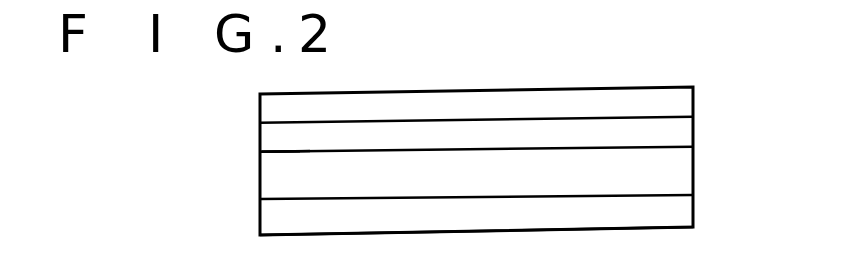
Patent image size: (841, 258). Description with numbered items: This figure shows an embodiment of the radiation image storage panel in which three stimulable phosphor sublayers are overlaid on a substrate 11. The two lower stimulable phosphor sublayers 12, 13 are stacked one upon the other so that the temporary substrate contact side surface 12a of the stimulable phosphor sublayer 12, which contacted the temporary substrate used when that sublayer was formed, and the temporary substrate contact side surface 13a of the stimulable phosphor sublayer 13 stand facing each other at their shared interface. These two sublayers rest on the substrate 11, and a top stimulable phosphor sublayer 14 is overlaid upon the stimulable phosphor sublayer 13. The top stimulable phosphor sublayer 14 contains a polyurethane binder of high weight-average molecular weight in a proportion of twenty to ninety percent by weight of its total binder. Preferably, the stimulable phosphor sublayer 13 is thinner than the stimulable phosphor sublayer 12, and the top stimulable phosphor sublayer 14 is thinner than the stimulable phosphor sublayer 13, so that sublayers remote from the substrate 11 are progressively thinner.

The substrate 11 is at (684, 216).
The stimulable phosphor sublayer 12 is at (684, 177).
The temporary substrate contact side surface 12a is at (279, 152).
The stimulable phosphor sublayer 13 is at (680, 137).
The temporary substrate contact side surface 13a is at (302, 153).
The top stimulable phosphor sublayer 14 is at (680, 106).